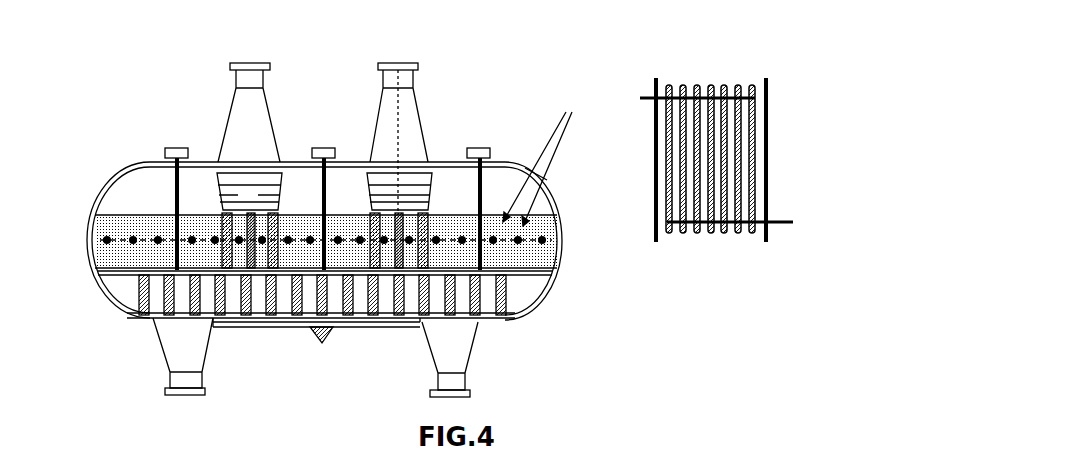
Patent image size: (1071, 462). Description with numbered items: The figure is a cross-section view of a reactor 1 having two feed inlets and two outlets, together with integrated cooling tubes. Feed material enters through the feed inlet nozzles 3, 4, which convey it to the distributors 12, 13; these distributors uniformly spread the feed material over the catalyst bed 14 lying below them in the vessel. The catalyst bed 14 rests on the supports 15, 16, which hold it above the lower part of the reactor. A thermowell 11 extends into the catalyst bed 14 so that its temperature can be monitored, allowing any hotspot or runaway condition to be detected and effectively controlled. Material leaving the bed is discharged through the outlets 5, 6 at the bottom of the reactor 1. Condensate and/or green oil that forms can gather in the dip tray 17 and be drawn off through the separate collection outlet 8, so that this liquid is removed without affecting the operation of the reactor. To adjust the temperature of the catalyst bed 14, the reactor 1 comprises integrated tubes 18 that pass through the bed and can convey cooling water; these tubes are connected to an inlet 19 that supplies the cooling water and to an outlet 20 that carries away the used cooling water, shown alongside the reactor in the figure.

The reactor 1 is at (324, 237).
The feed inlet nozzle 3 is at (282, 112).
The feed inlet nozzle 4 is at (396, 139).
The outlet 5 is at (494, 359).
The outlet 6 is at (180, 356).
The collection outlet 8 is at (318, 353).
The thermowell 11 is at (476, 193).
The distributor 12 is at (217, 179).
The distributor 13 is at (405, 220).
The catalyst bed 14 is at (355, 241).
The support 15 is at (538, 275).
The support 16 is at (331, 295).
The dip tray 17 is at (316, 330).
The integrated tubes 18 is at (563, 164).
The inlet for cooling water 19 is at (661, 147).
The outlet for used cooling water 20 is at (746, 175).